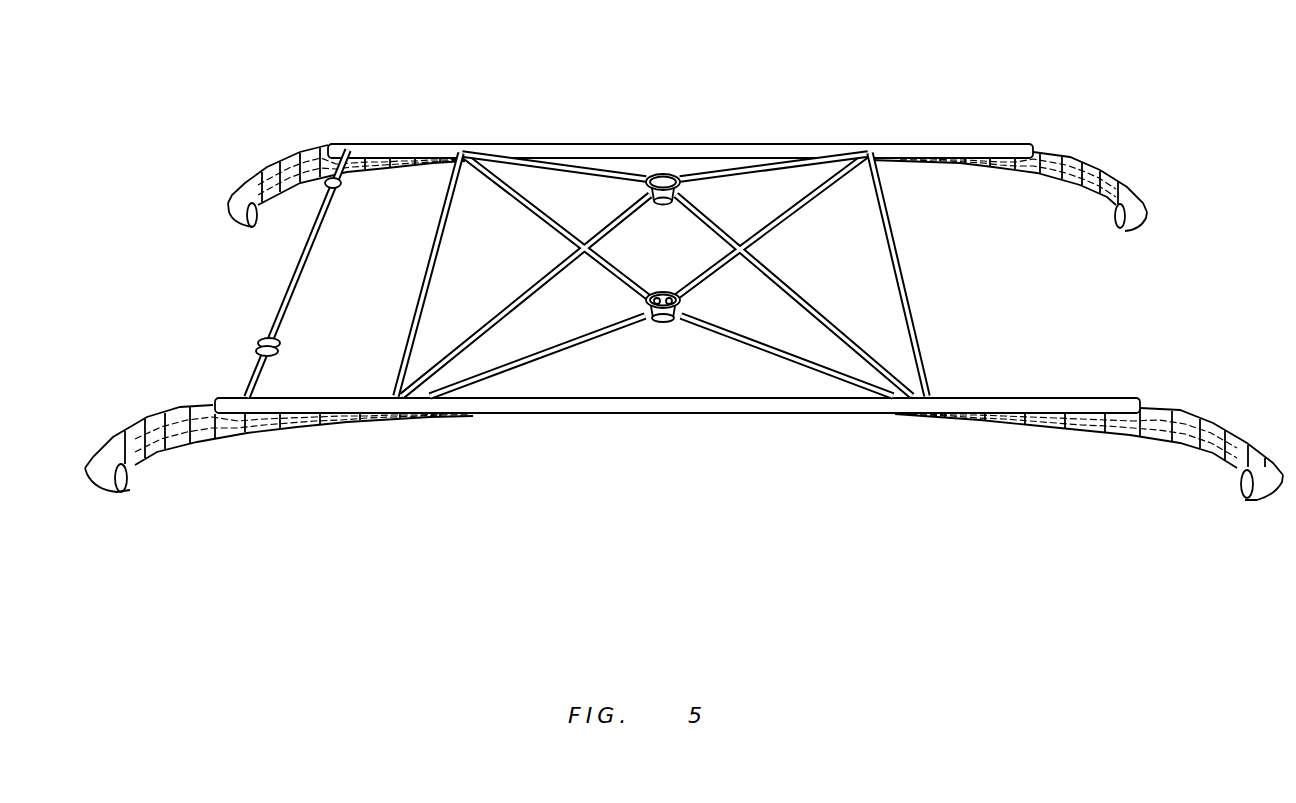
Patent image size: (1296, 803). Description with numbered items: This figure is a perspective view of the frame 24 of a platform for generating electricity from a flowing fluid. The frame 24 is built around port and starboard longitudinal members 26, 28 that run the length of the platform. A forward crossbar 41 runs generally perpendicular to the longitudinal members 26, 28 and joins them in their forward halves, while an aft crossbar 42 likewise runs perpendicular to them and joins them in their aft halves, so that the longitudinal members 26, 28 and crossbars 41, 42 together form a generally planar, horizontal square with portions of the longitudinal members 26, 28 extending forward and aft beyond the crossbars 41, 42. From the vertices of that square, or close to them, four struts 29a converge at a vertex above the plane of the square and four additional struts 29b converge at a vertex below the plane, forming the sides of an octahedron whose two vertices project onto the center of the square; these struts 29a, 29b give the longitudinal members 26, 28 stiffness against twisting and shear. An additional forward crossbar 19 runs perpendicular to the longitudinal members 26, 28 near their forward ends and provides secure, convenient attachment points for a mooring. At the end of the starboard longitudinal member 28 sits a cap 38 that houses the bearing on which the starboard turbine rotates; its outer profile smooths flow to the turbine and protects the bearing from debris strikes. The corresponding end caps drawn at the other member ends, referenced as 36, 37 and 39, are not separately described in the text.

The additional forward crossbar 19 is at (272, 312).
The frame 24 is at (975, 295).
The port longitudinal member 26 is at (660, 413).
The starboard longitudinal member 28 is at (669, 143).
The struts 29a is at (601, 170).
The additional struts 29b is at (524, 192).
The lower left hull section 36 is at (103, 493).
The lower right hull section 37 is at (1263, 498).
The cap 38 is at (250, 223).
The upper right hull section 39 is at (1130, 232).
The forward crossbar 41 is at (418, 293).
The aft crossbar 42 is at (900, 218).